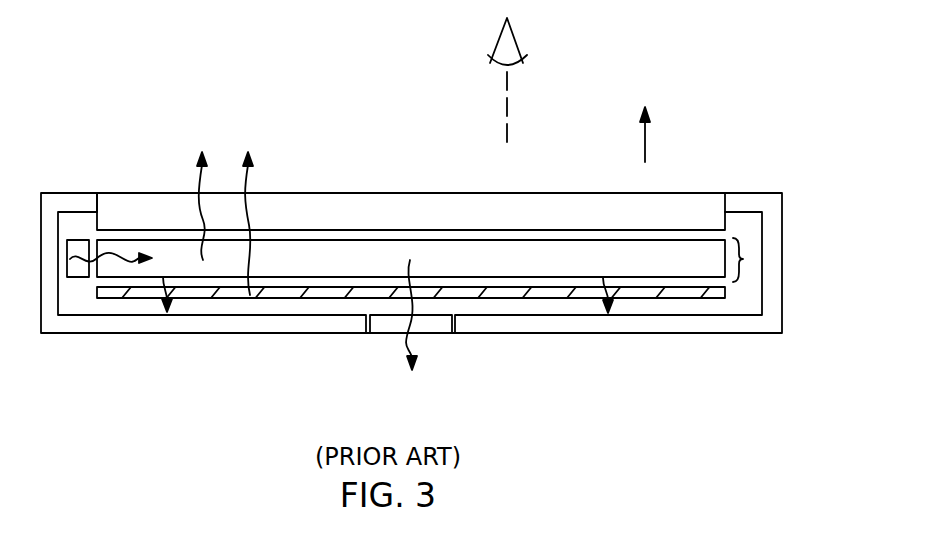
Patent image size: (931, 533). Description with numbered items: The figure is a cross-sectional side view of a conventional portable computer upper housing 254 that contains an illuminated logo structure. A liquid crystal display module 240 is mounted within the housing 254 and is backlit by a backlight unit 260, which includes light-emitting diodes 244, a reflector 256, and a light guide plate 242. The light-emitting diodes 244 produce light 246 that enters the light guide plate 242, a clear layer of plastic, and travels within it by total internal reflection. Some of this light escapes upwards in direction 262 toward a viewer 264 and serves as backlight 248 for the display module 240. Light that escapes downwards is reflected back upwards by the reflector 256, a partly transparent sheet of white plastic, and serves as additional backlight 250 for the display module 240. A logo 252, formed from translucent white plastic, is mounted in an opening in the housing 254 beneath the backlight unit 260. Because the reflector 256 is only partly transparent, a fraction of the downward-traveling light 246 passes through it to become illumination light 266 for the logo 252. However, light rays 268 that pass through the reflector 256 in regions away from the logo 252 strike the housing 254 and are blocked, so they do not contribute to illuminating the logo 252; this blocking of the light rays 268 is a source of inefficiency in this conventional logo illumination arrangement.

The liquid crystal display module 240 is at (548, 202).
The light guide plate 242 is at (383, 253).
The light-emitting diodes 244 is at (78, 248).
The light 246 is at (122, 257).
The backlight 248 is at (198, 177).
The additional backlight 250 is at (248, 177).
The logo 252 is at (440, 325).
The portable computer upper housing 254 is at (707, 325).
The reflector 256 is at (200, 294).
The backlight unit 260 is at (743, 259).
The direction 262 is at (645, 137).
The viewer 264 is at (516, 42).
The illumination light 266 is at (412, 345).
The light rays 268 is at (158, 293).